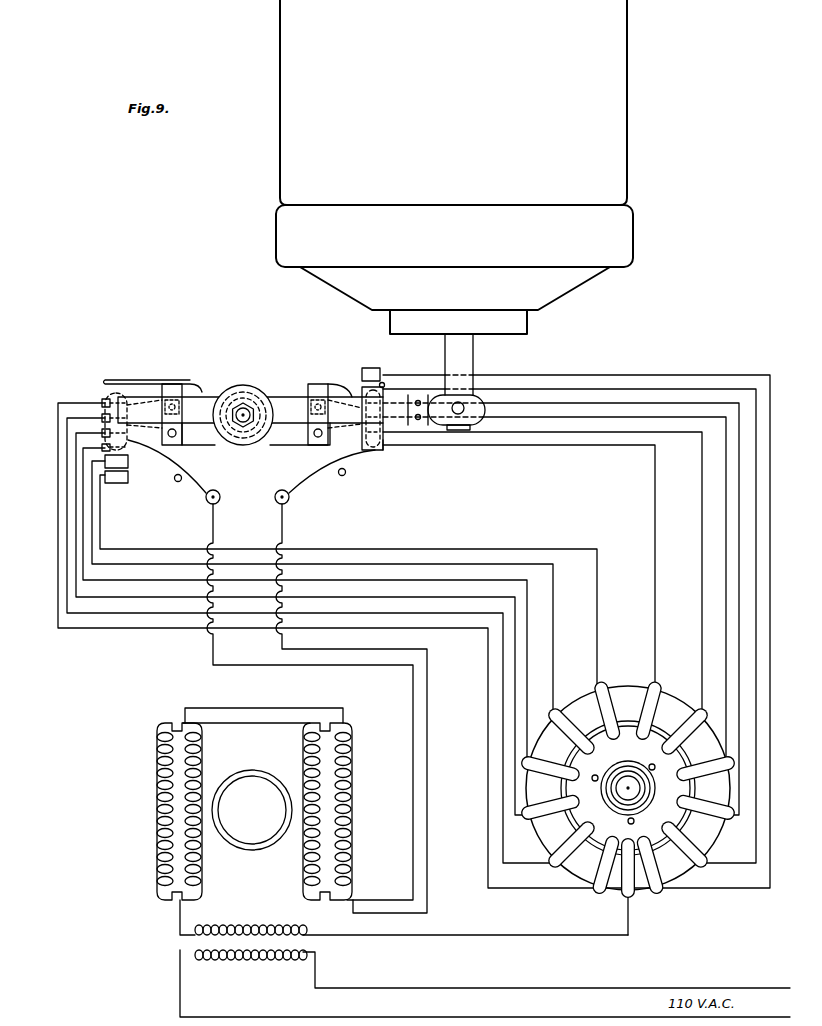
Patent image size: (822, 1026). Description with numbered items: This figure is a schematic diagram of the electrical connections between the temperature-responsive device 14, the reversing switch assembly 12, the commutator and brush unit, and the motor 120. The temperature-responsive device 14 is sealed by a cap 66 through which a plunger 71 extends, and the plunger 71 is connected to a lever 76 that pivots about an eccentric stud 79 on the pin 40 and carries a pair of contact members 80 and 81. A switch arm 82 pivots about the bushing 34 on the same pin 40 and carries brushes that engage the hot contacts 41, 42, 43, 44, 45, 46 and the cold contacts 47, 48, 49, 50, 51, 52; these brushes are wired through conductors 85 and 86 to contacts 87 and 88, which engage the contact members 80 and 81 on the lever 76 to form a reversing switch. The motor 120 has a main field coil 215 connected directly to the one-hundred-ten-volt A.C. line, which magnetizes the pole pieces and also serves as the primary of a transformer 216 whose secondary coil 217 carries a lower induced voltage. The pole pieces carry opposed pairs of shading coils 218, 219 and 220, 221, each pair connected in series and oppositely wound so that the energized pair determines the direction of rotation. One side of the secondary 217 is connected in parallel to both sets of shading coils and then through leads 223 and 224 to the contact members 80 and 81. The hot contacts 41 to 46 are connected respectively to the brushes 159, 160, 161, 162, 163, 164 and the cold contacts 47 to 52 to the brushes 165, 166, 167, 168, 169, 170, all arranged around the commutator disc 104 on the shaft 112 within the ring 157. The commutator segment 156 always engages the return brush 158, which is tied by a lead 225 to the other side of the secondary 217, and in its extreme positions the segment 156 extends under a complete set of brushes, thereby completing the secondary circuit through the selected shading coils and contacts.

The temperature-responsive device 14 is at (275, 50).
The cap 66 is at (350, 289).
The plunger 71 is at (474, 352).
The switch assembly 12 is at (280, 423).
The eccentric stud 79 is at (250, 403).
The contact 87 is at (116, 382).
The conductor 85 is at (178, 388).
The conductor 86 is at (318, 388).
The cold contact 50 is at (362, 400).
The cold contact 51 is at (366, 398).
The cold contact 52 is at (373, 365).
The contact 88 is at (385, 383).
The hot contact 41 is at (101, 416).
The hot contact 42 is at (100, 405).
The hot contact 43 is at (100, 420).
The hot contact 44 is at (100, 436).
The hot contact 45 is at (100, 450).
The hot contact 46 is at (112, 481).
The contact member 80 is at (130, 445).
The bushing 34 is at (224, 448).
The pin 40 is at (241, 455).
The switch arm 82 is at (292, 440).
The cold contact 49 is at (355, 422).
The cold contact 48 is at (366, 428).
The contact member 81 is at (383, 442).
The cold contact 47 is at (375, 452).
The lever 76 is at (440, 426).
The motor 120 is at (253, 804).
The shading coil 218 is at (158, 855).
The shading coil 219 is at (305, 848).
The shading coil 220 is at (203, 854).
The shading coil 221 is at (352, 850).
The lead 223 is at (413, 753).
The lead 224 is at (430, 753).
The transformer 216 is at (469, 958).
The secondary coil 217 is at (249, 927).
The main field coil 215 is at (243, 961).
The lead 225 is at (552, 938).
The commutator disc 104 is at (633, 788).
The shaft 112 is at (622, 788).
The commutator segment 156 is at (628, 823).
The commutator ring 157 is at (681, 872).
The return brush 158 is at (631, 900).
The brush 159 is at (600, 894).
The brush 160 is at (557, 867).
The brush 161 is at (526, 820).
The brush 162 is at (545, 772).
The brush 163 is at (560, 708).
The brush 164 is at (604, 686).
The brush 165 is at (658, 687).
The brush 166 is at (683, 732).
The brush 167 is at (702, 768).
The brush 168 is at (710, 806).
The brush 169 is at (707, 860).
The brush 170 is at (658, 894).